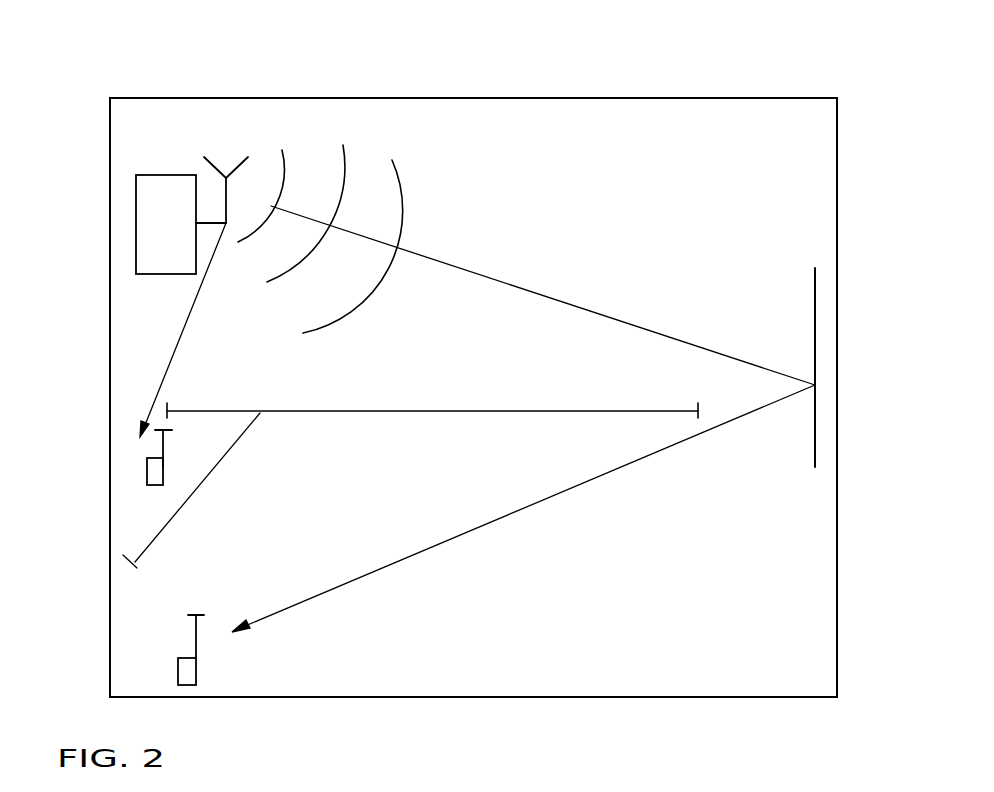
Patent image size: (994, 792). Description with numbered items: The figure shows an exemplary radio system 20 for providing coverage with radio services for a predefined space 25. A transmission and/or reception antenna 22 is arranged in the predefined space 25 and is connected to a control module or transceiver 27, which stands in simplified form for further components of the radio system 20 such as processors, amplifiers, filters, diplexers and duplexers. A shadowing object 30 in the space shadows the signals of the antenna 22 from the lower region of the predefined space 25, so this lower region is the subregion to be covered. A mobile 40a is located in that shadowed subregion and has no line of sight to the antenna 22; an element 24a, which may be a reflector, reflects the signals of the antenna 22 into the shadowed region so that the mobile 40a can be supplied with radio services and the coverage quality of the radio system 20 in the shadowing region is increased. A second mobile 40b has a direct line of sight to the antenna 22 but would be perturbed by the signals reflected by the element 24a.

The radio system 20 is at (660, 80).
The transmission and/or reception antenna 22 is at (236, 170).
The element 24a is at (815, 297).
The predefined space 25 is at (837, 146).
The control module or transceiver 27 is at (155, 178).
The shadowing object 30 is at (418, 411).
The mobile 40a is at (197, 667).
The second mobile 40b is at (165, 469).